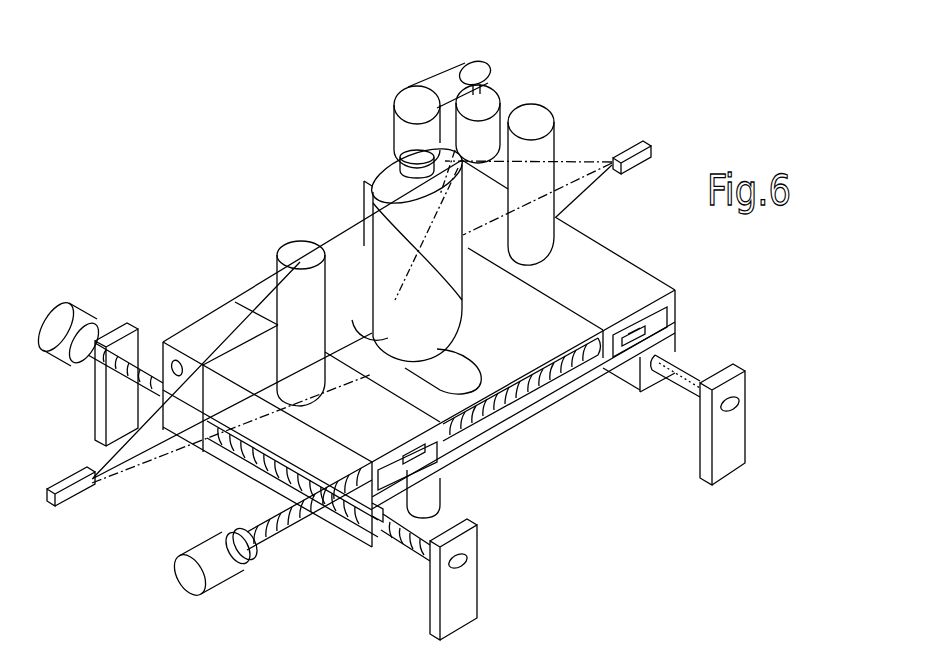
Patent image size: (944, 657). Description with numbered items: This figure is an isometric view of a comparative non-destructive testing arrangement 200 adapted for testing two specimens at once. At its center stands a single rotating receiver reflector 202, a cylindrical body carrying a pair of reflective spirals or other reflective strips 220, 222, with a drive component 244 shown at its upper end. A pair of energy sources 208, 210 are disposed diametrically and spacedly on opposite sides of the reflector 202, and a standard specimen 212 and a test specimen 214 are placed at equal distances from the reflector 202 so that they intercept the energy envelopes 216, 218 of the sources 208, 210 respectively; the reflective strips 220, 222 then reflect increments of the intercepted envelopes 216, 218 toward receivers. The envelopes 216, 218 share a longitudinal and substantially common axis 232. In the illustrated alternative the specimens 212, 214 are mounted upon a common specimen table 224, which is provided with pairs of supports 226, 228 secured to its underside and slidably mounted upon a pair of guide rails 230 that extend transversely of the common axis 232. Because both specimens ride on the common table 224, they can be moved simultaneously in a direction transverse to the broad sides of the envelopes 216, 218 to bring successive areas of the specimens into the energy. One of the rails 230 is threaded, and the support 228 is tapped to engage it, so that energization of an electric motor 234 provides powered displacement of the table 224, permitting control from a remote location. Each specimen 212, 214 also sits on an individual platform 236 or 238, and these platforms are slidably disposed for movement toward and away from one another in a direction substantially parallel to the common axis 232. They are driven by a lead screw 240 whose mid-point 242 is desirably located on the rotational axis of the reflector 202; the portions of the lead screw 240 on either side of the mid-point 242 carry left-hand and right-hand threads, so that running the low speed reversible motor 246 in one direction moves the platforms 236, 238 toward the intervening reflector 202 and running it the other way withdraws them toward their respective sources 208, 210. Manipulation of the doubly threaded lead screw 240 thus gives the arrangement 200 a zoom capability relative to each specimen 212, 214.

The comparative non-destructive testing arrangement 200 is at (385, 70).
The rotating receiver reflector 202 is at (372, 186).
The energy source 208 is at (73, 497).
The energy source 210 is at (636, 148).
The standard specimen 212 is at (290, 254).
The test specimen 214 is at (541, 106).
The energy envelope 216 is at (137, 460).
The energy envelope 218 is at (578, 208).
The reflective spiral 220 is at (440, 250).
The reflective spiral 222 is at (458, 212).
The common specimen table 224 is at (670, 333).
The table support 226 is at (187, 423).
The table support 228 is at (672, 348).
The guide rail 230 is at (662, 373).
The common axis of the energy envelopes 232 is at (262, 370).
The electric motor 234 is at (70, 308).
The individual platform 236 is at (305, 448).
The individual platform 238 is at (640, 277).
The lead screw 240 is at (540, 373).
The mid-point of the lead screw 242 is at (500, 373).
The roller 244 is at (402, 164).
The low speed reversible motor 246 is at (190, 573).